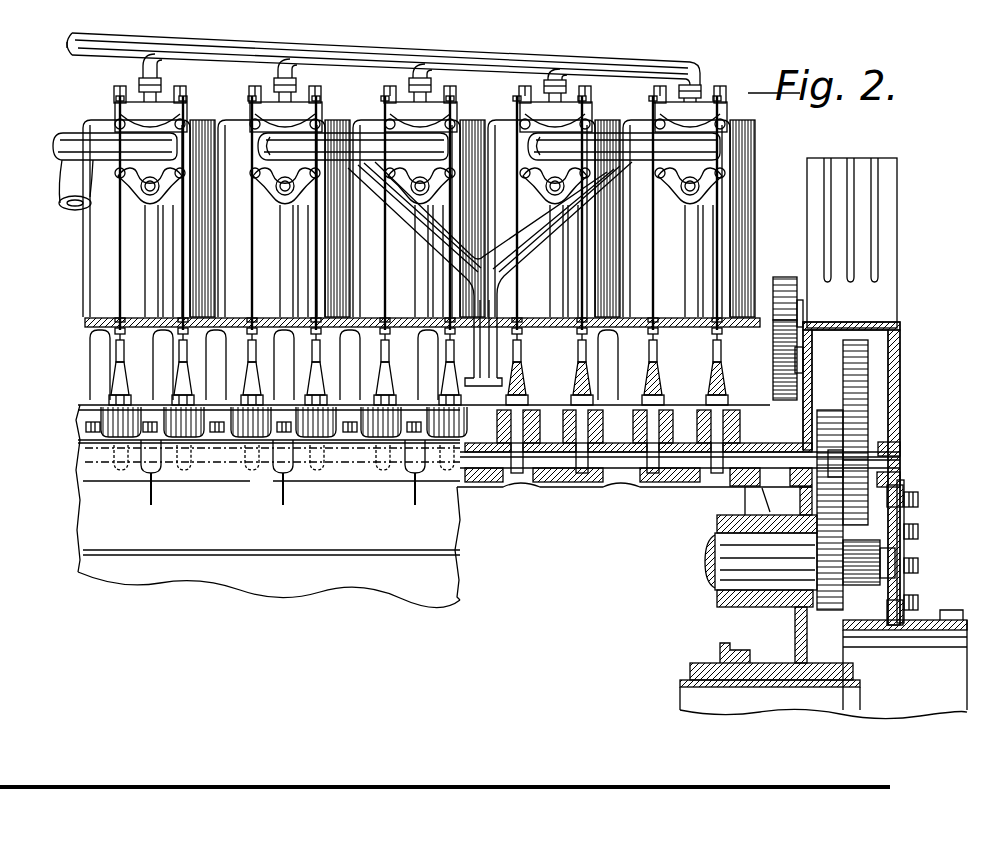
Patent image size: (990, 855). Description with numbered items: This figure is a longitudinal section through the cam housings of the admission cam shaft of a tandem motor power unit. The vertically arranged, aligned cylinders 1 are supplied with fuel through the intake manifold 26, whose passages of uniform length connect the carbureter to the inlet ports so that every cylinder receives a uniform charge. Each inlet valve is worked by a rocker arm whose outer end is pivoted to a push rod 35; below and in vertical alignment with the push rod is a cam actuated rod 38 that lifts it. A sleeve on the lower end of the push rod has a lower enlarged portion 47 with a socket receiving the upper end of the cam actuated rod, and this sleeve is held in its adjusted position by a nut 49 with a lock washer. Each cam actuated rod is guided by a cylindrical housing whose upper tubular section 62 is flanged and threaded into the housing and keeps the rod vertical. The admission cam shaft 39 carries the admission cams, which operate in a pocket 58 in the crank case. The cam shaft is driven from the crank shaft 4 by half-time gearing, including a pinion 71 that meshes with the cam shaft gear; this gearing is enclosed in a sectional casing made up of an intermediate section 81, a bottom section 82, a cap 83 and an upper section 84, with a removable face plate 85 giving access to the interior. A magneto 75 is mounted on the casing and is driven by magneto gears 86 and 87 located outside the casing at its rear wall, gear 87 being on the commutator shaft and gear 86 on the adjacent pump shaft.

The cylinder 1 is at (419, 201).
The crank shaft 4 is at (757, 557).
The intake manifold 26 is at (500, 266).
The push rod 35 is at (655, 232).
The cam actuated rod 38 is at (256, 356).
The admission cam shaft 39 is at (686, 470).
The lower enlarged portion 47 is at (389, 348).
The nut 49 is at (121, 316).
The pocket 58 is at (537, 482).
The upper tubular section 62 is at (119, 381).
The pinion 71 is at (835, 432).
The magneto 75 is at (840, 395).
The intermediate section 81 is at (893, 488).
The bottom section 82 is at (906, 606).
The cap 83 is at (897, 338).
The upper section 84 is at (894, 418).
The removable face plate 85 is at (905, 553).
The magneto gear 86 is at (786, 384).
The magneto gear 87 is at (786, 278).